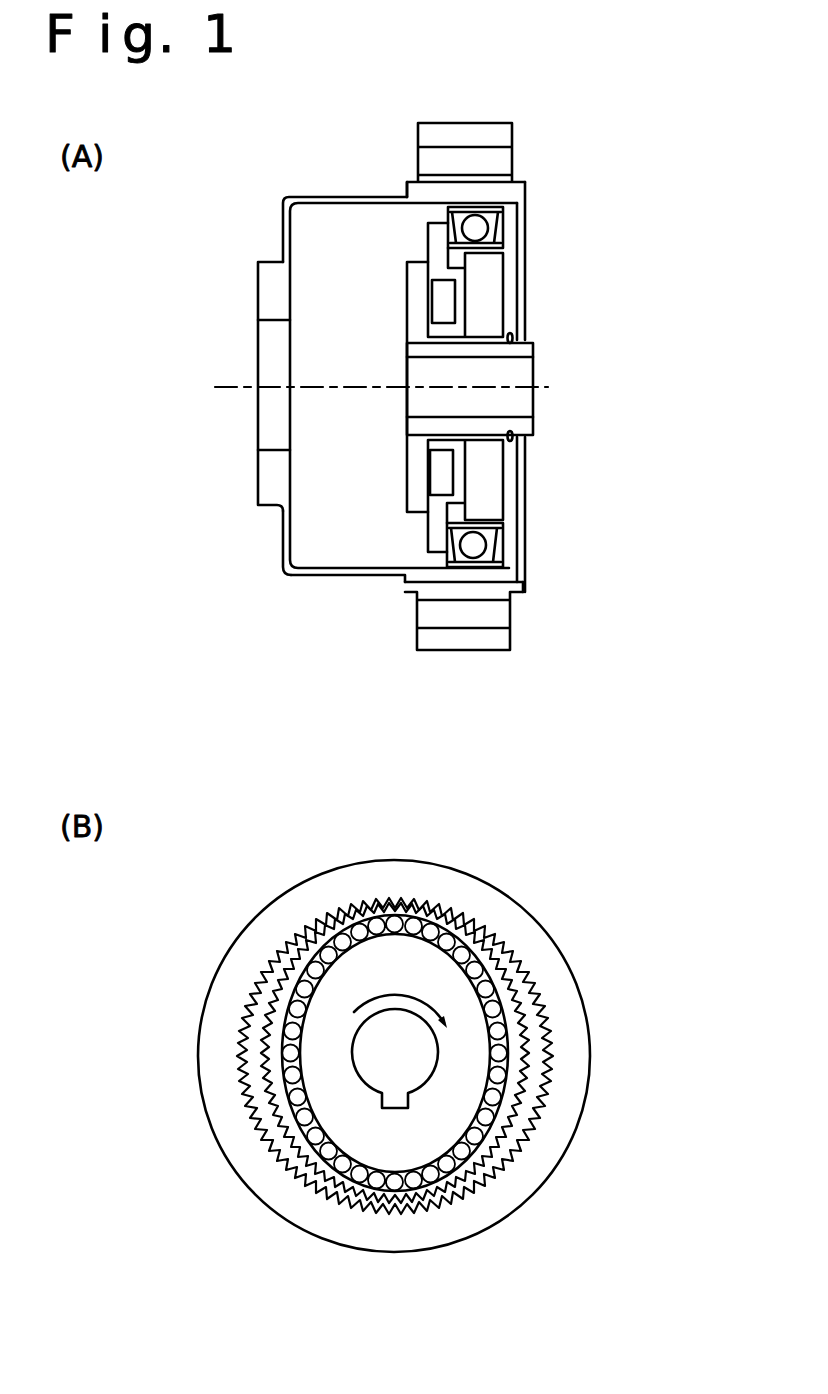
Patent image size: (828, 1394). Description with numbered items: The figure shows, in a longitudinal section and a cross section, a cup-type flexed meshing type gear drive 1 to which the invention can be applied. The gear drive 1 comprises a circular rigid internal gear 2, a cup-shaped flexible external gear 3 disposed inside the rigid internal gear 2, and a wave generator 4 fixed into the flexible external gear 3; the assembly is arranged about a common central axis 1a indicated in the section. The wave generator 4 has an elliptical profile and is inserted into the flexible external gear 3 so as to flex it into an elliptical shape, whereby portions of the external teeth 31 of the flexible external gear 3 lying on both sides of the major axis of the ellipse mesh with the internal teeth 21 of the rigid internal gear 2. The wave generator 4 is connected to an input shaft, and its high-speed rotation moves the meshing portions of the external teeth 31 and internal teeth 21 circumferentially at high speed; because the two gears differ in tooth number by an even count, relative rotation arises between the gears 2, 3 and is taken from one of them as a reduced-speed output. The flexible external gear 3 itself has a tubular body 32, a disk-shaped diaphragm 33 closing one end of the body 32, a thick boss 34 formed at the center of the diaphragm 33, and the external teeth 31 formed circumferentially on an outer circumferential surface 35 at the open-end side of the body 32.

The cup-type flexed meshing type gear drive 1 is at (549, 188).
The device axis 1a is at (228, 385).
The circular rigid internal gear 2 is at (515, 123).
The cup-shaped flexible external gear 3 is at (377, 192).
The wave generator 4 is at (530, 348).
The internal teeth 21 is at (527, 580).
The external teeth 31 is at (477, 578).
The tubular body 32 is at (415, 655).
The disk-shaped diaphragm 33 is at (247, 508).
The thick boss 34 is at (272, 478).
The outer circumferential surface 35 is at (332, 195).